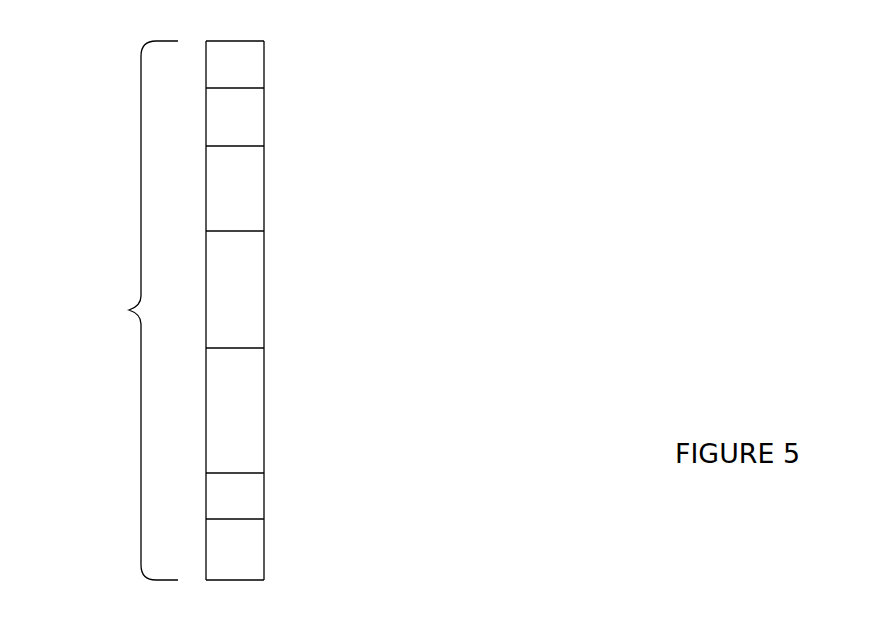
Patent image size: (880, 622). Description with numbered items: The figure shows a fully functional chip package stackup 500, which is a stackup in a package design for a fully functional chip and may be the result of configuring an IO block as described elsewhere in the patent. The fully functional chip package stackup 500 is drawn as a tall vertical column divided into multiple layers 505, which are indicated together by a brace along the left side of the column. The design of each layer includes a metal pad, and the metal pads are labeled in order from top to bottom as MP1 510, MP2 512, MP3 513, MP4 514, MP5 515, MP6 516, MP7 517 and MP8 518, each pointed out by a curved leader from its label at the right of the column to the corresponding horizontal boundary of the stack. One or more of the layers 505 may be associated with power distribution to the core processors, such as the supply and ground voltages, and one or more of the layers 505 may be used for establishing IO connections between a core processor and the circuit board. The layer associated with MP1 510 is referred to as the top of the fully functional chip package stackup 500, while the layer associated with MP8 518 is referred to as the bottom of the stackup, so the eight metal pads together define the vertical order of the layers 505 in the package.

The fully functional chip package stackup 500 is at (534, 308).
The layers 505 is at (100, 310).
The MP1 510 is at (282, 21).
The MP2 512 is at (266, 81).
The MP3 513 is at (266, 142).
The MP4 514 is at (266, 227).
The MP5 515 is at (266, 339).
The MP6 516 is at (266, 466).
The MP7 517 is at (266, 513).
The MP8 518 is at (267, 587).